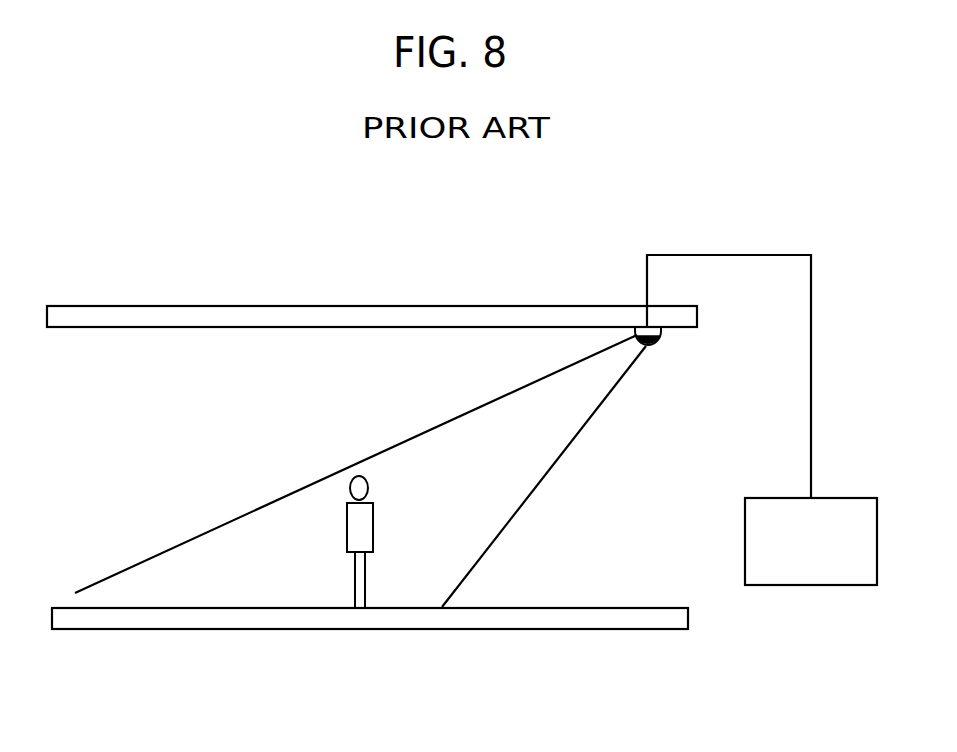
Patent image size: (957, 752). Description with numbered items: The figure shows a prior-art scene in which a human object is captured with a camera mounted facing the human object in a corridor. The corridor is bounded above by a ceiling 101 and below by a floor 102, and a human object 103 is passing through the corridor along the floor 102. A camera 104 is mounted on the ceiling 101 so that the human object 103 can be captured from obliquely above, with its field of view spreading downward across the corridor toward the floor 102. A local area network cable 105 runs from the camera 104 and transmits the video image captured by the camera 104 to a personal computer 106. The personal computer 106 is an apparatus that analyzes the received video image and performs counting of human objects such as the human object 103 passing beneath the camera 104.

The ceiling 101 is at (141, 306).
The floor 102 is at (208, 629).
The human object 103 is at (373, 525).
The camera 104 is at (662, 336).
The local area network (LAN) cable 105 is at (812, 302).
The personal computer (PC) 106 is at (878, 538).